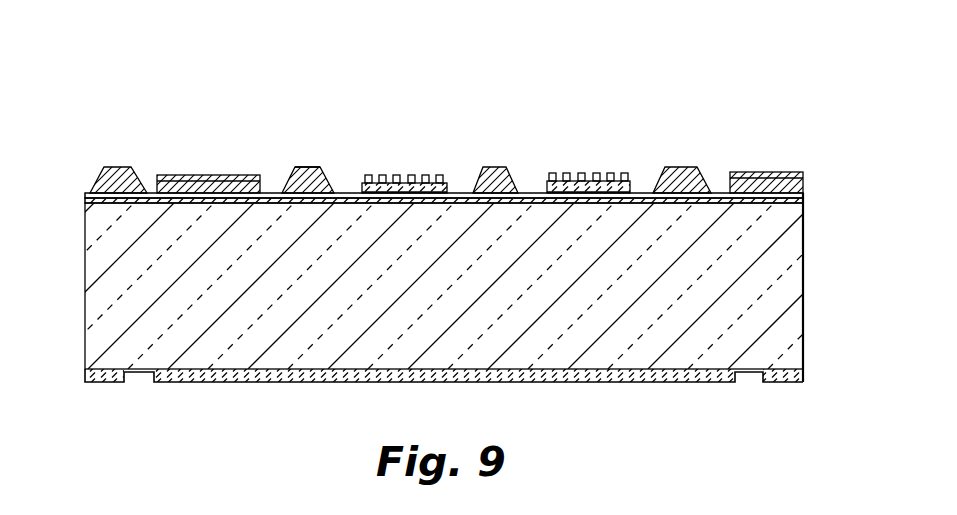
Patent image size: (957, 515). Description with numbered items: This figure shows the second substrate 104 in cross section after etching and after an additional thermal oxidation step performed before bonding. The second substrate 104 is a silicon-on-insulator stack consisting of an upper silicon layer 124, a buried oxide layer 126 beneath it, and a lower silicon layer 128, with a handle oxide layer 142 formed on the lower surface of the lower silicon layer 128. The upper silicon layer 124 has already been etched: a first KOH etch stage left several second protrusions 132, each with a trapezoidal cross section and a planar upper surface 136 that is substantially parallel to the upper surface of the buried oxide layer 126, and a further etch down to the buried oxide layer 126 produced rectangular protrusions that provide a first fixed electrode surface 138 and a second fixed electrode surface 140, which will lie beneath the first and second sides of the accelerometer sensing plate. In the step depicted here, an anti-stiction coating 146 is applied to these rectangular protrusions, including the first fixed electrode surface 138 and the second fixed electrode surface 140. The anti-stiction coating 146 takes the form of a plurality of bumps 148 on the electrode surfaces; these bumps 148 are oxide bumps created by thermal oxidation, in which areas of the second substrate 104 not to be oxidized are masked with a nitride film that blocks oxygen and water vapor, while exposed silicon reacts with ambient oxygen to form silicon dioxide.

The second substrate 104 is at (142, 78).
The upper silicon layer 124 is at (804, 191).
The buried oxide layer 126 is at (805, 200).
The lower silicon layer 128 is at (803, 272).
The second protrusions 132 is at (328, 173).
The planar upper surface 136 is at (298, 166).
The first fixed electrode surface 138 is at (374, 181).
The second fixed electrode surface 140 is at (562, 179).
The handle oxide layer 142 is at (805, 373).
The anti-stiction coating 146 is at (192, 176).
The bumps 148 is at (441, 178).